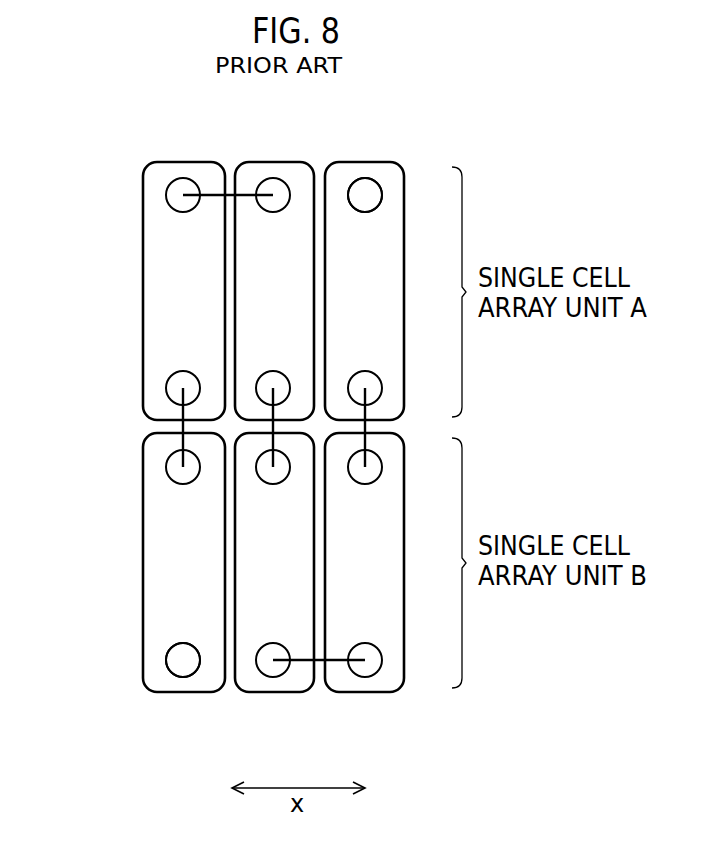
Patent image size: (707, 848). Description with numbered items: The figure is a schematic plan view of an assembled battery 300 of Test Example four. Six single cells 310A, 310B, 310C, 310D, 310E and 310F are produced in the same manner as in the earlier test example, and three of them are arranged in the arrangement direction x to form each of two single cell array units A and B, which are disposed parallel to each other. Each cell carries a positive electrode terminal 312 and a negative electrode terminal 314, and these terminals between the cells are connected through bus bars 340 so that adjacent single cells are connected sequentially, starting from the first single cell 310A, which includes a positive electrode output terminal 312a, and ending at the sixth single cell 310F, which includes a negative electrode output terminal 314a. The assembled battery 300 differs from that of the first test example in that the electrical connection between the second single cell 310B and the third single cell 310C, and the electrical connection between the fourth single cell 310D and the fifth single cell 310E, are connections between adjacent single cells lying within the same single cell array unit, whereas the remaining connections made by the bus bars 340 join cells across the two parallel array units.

The assembled battery 300 is at (70, 120).
The 1st single cell 310A is at (186, 696).
The 2nd single cell 310B is at (173, 160).
The 3rd single cell 310C is at (264, 160).
The 4th single cell 310D is at (276, 696).
The 5th single cell 310E is at (366, 696).
The 6th single cell 310F is at (352, 160).
The positive electrode terminal 312 is at (166, 660).
The positive electrode output terminal 312a is at (177, 648).
The negative electrode terminal 314 is at (375, 176).
The negative electrode output terminal 314a is at (381, 197).
The bus bar 340 is at (180, 427).